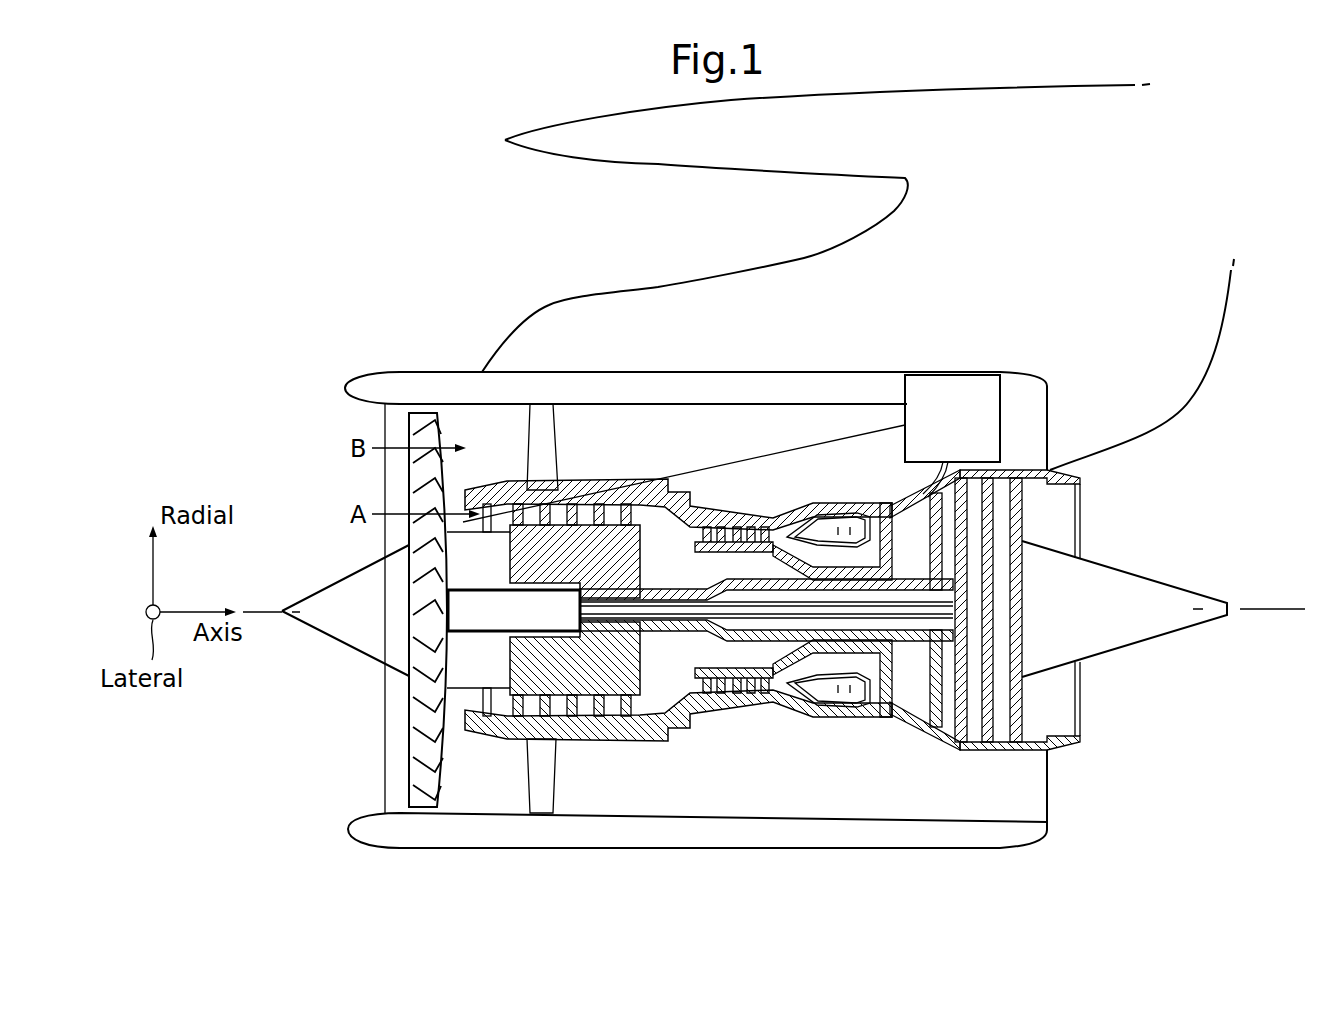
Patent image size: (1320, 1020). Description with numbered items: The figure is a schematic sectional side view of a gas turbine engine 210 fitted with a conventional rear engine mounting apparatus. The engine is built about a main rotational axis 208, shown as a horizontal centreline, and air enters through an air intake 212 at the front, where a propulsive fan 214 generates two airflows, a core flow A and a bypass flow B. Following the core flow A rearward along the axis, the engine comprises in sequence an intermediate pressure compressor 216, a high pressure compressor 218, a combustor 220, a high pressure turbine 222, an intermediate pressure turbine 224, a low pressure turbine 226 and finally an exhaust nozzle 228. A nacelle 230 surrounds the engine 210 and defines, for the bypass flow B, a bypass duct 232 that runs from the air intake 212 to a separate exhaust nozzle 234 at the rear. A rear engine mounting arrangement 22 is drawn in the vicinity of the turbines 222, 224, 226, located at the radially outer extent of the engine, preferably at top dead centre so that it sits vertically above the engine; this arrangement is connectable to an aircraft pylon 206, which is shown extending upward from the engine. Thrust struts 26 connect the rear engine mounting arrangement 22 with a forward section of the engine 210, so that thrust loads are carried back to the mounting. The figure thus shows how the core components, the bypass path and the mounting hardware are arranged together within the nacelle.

The rear engine mounting arrangement 22 is at (988, 420).
The thrust struts 26 is at (772, 456).
The aircraft pylon 206 is at (961, 287).
The main rotational axis 208 is at (244, 604).
The gas turbine engine 210 is at (637, 400).
The air intake 212 is at (391, 427).
The propulsive fan 214 is at (424, 420).
The intermediate pressure compressor 216 is at (598, 552).
The high pressure compressor 218 is at (720, 692).
The combustor 220 is at (832, 700).
The high pressure turbine 222 is at (882, 706).
The intermediate pressure turbine 224 is at (933, 724).
The low pressure turbine 226 is at (1023, 722).
The exhaust nozzle 228 is at (1062, 522).
The nacelle 230 is at (556, 401).
The bypass duct 232 is at (741, 445).
The exhaust nozzle 234 is at (1027, 803).